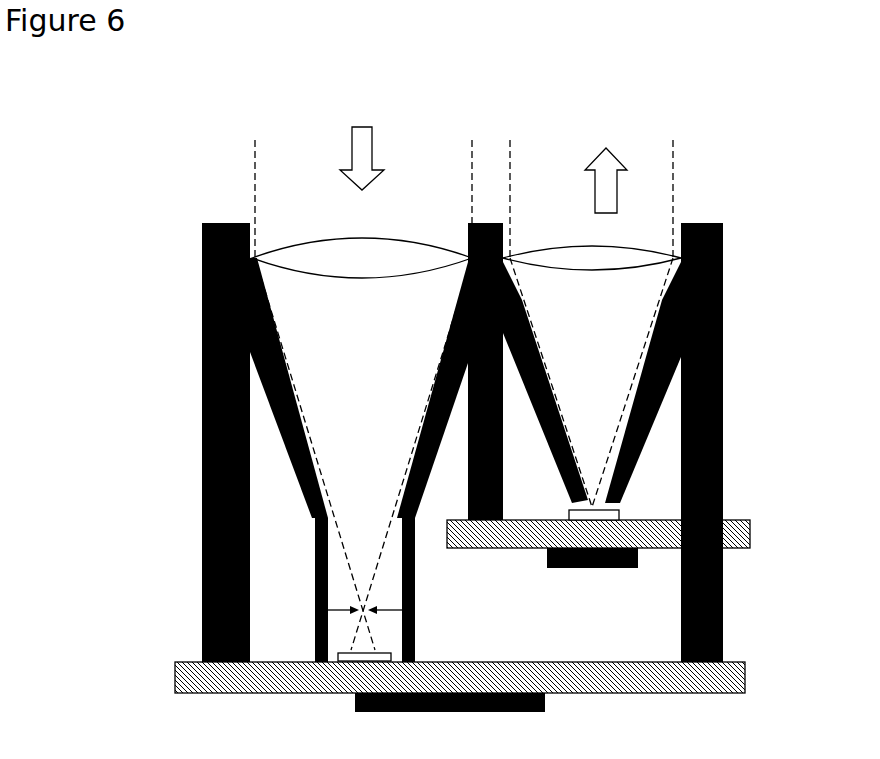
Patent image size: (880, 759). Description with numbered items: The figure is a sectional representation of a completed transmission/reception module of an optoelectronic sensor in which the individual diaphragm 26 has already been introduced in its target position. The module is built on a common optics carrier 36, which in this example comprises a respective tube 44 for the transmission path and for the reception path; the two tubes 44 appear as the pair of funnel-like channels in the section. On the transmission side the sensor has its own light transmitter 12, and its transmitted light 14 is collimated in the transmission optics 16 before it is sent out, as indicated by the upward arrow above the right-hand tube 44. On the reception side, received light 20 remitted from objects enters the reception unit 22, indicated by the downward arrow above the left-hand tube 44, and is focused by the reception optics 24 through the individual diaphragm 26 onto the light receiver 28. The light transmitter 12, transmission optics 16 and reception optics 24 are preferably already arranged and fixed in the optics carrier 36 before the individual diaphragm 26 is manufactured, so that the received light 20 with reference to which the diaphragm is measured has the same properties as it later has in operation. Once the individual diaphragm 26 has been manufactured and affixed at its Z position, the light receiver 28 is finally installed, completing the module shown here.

The light transmitter 12 is at (570, 517).
The transmitted light 14 is at (673, 187).
The transmission optics 16 is at (588, 258).
The received light 20 is at (253, 182).
The reception unit 22 is at (395, 442).
The reception optics 24 is at (322, 258).
The individual diaphragm 26 is at (417, 605).
The light receiver 28 is at (350, 658).
The optics carrier 36 is at (202, 300).
The tube 44 is at (297, 392).